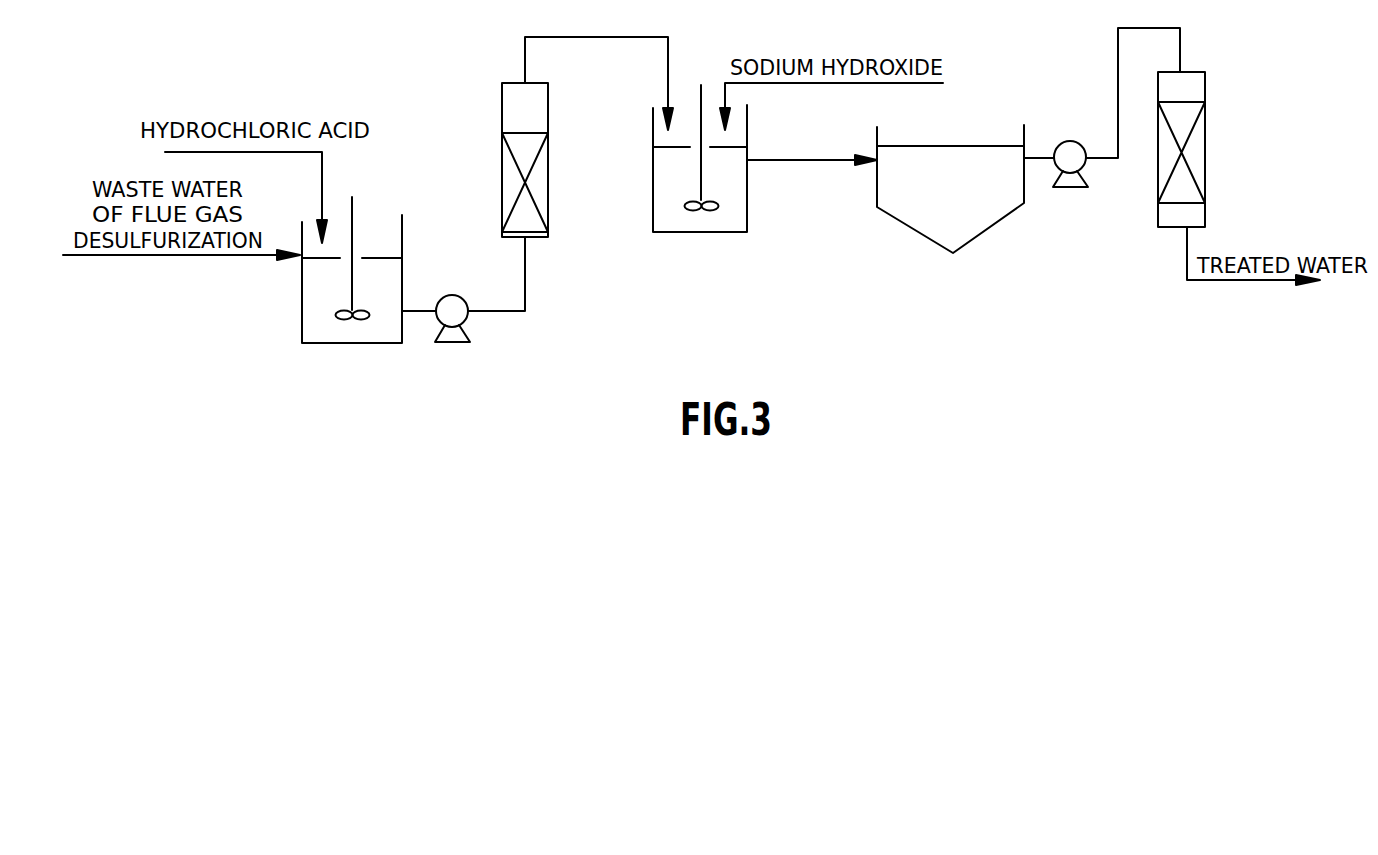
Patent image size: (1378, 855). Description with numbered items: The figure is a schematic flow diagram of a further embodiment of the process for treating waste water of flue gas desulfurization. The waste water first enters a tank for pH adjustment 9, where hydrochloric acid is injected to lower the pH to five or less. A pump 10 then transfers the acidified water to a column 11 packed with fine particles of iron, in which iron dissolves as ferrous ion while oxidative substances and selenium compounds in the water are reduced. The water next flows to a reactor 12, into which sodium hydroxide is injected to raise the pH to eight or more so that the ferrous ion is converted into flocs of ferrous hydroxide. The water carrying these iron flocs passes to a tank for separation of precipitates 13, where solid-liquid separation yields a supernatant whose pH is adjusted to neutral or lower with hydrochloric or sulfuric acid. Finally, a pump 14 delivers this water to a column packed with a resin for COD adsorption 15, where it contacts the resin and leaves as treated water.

The tank for pH adjustment 9 is at (345, 343).
The pump 10 is at (455, 295).
The column packed with fine particles of iron 11 is at (502, 127).
The reactor 12 is at (692, 232).
The tank for separation of precipitates 13 is at (985, 232).
The pump 14 is at (1077, 141).
The column packed with a resin for COD adsorption 15 is at (1205, 142).